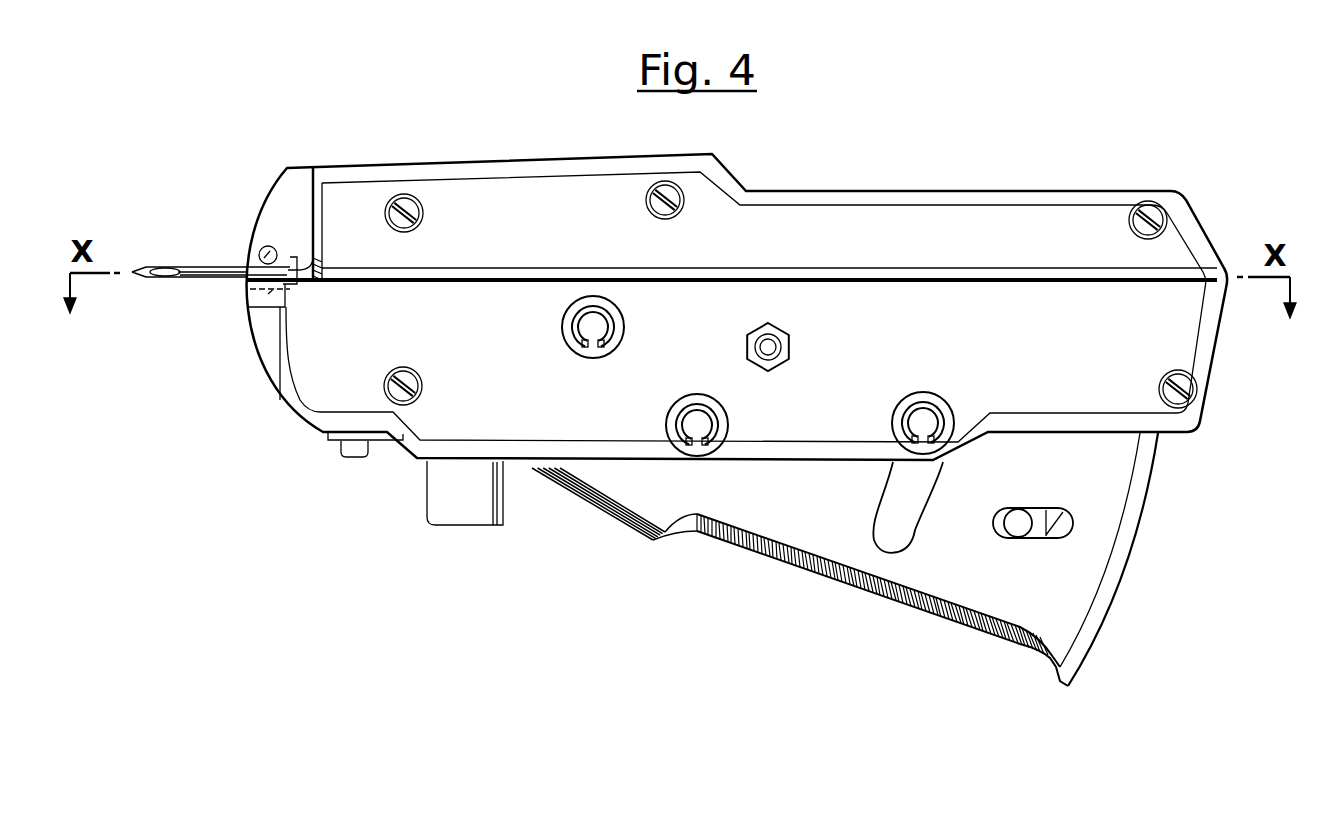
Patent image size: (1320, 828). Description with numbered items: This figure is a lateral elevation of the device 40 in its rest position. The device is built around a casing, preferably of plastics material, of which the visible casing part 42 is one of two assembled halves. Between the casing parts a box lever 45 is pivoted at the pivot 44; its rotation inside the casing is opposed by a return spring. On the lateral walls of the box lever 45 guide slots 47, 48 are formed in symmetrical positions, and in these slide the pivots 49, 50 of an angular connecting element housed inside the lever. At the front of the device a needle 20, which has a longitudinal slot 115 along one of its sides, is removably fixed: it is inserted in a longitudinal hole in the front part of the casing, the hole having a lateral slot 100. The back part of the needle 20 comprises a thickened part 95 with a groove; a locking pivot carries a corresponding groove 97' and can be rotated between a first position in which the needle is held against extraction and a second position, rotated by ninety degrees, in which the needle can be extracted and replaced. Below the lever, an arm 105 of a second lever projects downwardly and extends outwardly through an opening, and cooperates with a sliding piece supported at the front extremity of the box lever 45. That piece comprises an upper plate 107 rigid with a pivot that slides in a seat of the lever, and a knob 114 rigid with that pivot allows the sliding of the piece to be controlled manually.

The device 40 is at (828, 188).
The casing part 42 is at (986, 215).
The pivot 44 is at (692, 418).
The pivot 50 is at (920, 420).
The box lever 45 is at (888, 590).
The guide slot 48 is at (932, 502).
The guide slot 47 is at (1055, 508).
The pivot 49 is at (1018, 511).
The needle 20 is at (160, 266).
The longitudinal slot 115 is at (177, 266).
The groove 97' is at (244, 232).
The lateral slot 100 is at (281, 267).
The thickened part 95 is at (250, 293).
The upper plate 107 is at (329, 450).
The arm 105 is at (353, 456).
The knob 114 is at (450, 515).